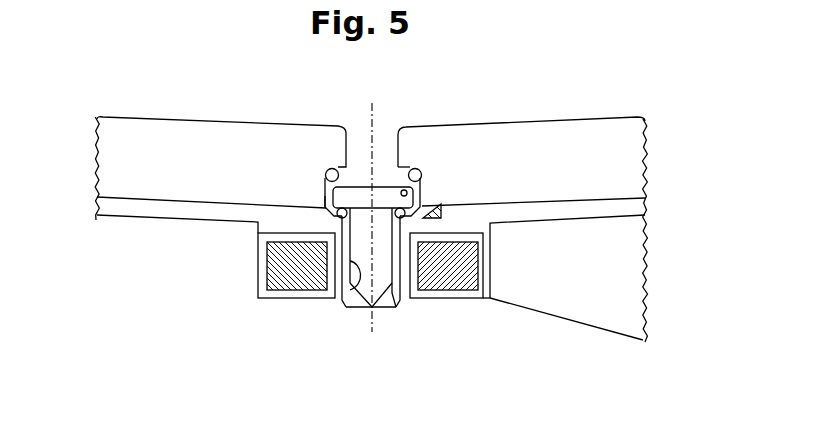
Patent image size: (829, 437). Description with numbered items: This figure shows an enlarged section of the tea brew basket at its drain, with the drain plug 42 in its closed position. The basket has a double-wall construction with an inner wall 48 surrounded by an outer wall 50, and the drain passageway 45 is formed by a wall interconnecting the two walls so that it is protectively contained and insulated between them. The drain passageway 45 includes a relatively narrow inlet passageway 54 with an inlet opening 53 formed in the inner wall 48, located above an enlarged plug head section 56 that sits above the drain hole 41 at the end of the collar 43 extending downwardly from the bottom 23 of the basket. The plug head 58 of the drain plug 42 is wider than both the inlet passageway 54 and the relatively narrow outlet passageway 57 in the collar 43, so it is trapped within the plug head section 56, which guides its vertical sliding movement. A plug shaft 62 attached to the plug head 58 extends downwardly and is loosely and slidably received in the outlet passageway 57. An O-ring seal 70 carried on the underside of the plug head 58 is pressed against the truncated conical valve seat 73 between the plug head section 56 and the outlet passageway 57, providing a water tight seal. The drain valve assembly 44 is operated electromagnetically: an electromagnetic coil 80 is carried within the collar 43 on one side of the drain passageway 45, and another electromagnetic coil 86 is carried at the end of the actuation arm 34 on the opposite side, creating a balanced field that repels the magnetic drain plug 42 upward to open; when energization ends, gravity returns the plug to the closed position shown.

The bottom 23 is at (120, 216).
The actuation arm 34 is at (653, 323).
The drain hole 41 is at (390, 310).
The drain plug 42 is at (408, 228).
The collar 43 is at (258, 254).
The drain valve assembly 44 is at (433, 208).
The drain passageway 45 is at (352, 308).
The inner wall 48 is at (605, 117).
The outer wall 50 is at (122, 197).
The inlet opening 53 is at (382, 187).
The inlet passageway 54 is at (326, 172).
The plug head section 56 is at (330, 168).
The outlet passageway 57 is at (340, 300).
The plug head 58 is at (413, 187).
The plug shaft 62 is at (376, 312).
The O-ring seal 70 is at (322, 203).
The valve seat 73 is at (402, 190).
The electromagnetic coil 80 is at (262, 281).
The electromagnetic coil 86 is at (460, 297).